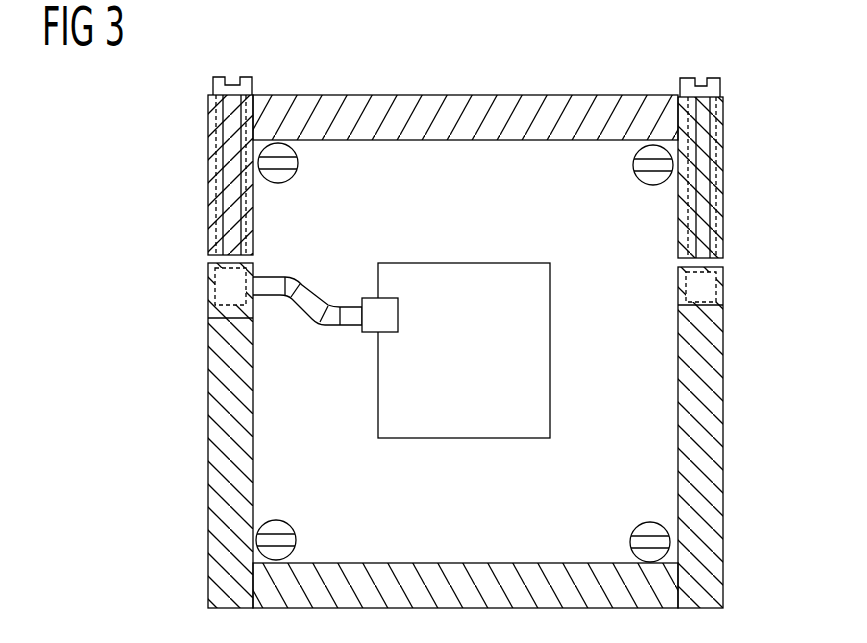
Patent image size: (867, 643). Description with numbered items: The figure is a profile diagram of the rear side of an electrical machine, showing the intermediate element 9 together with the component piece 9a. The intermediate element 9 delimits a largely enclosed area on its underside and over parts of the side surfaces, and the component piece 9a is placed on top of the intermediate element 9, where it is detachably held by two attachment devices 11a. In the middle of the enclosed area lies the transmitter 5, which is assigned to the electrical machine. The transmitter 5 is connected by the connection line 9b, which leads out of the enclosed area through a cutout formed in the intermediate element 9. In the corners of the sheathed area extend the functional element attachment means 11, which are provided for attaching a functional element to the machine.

The transmitter 5 is at (470, 427).
The intermediate element 9 is at (695, 405).
The component piece 9a is at (467, 110).
The connection line 9b is at (322, 316).
The functional element attachment means 11 is at (278, 174).
The attachment devices 11a is at (243, 87).